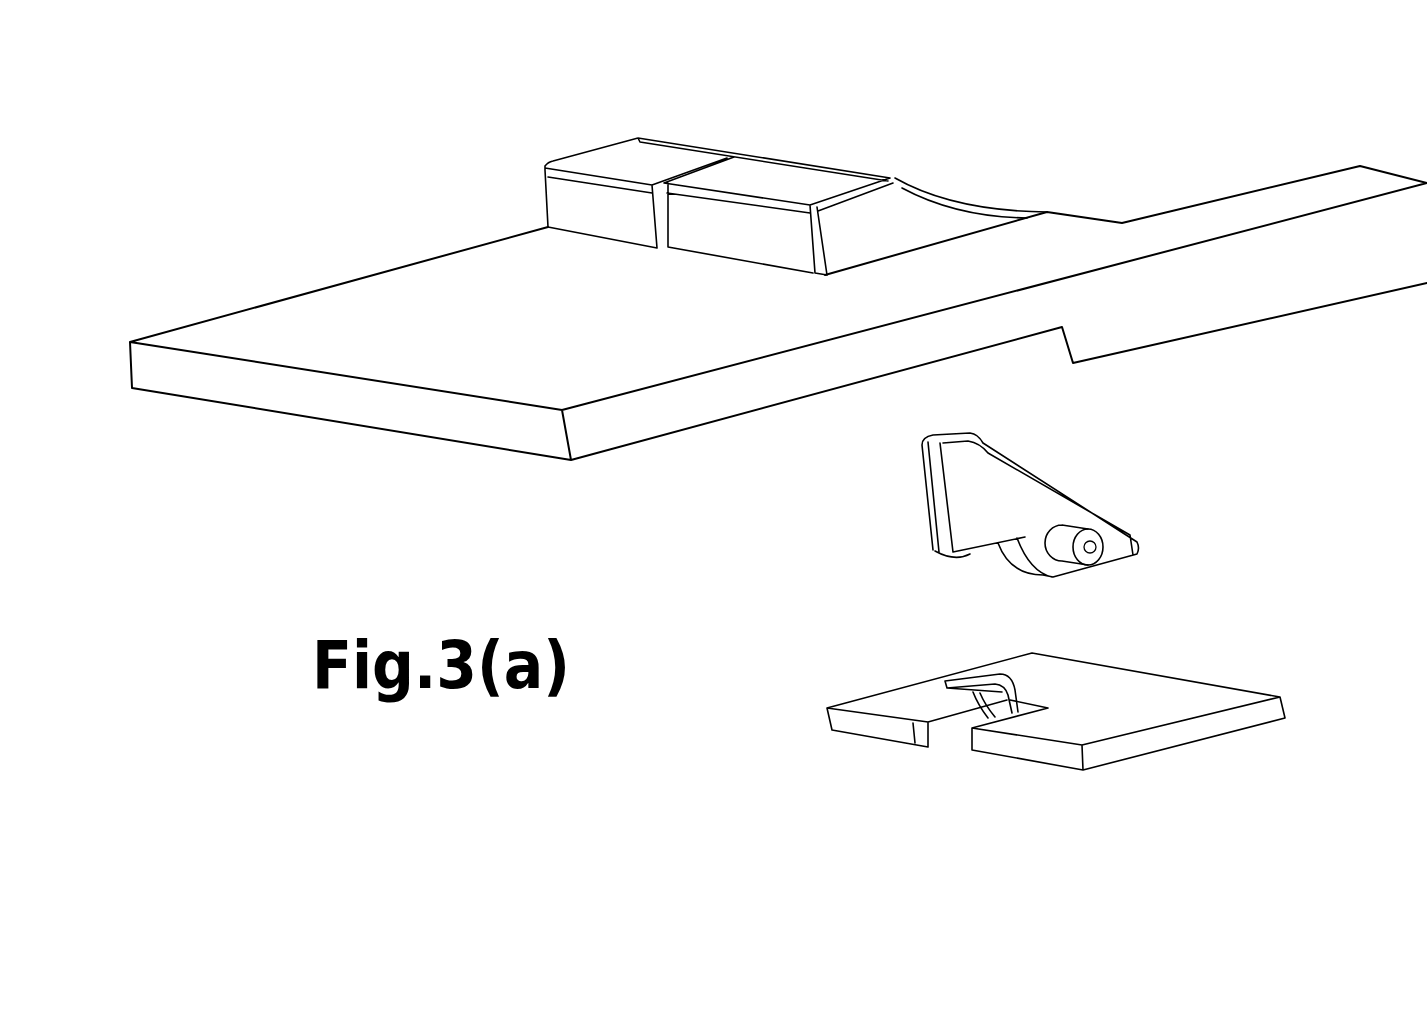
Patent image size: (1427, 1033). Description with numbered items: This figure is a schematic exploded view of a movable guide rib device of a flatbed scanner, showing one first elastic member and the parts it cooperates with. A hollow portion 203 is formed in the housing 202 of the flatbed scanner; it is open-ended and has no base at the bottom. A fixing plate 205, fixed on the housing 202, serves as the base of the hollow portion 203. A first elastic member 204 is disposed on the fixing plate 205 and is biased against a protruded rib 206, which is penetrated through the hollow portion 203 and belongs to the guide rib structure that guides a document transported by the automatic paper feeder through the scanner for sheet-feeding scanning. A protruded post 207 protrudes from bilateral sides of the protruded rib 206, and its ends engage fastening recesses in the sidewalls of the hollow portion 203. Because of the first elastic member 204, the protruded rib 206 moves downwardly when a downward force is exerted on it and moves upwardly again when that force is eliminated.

The housing 202 is at (432, 300).
The hollow portion 203 is at (732, 160).
The first elastic member 204 is at (950, 683).
The fixing plate 205 is at (1197, 728).
The protruded rib 206 is at (1007, 492).
The protruded post 207 is at (1088, 537).